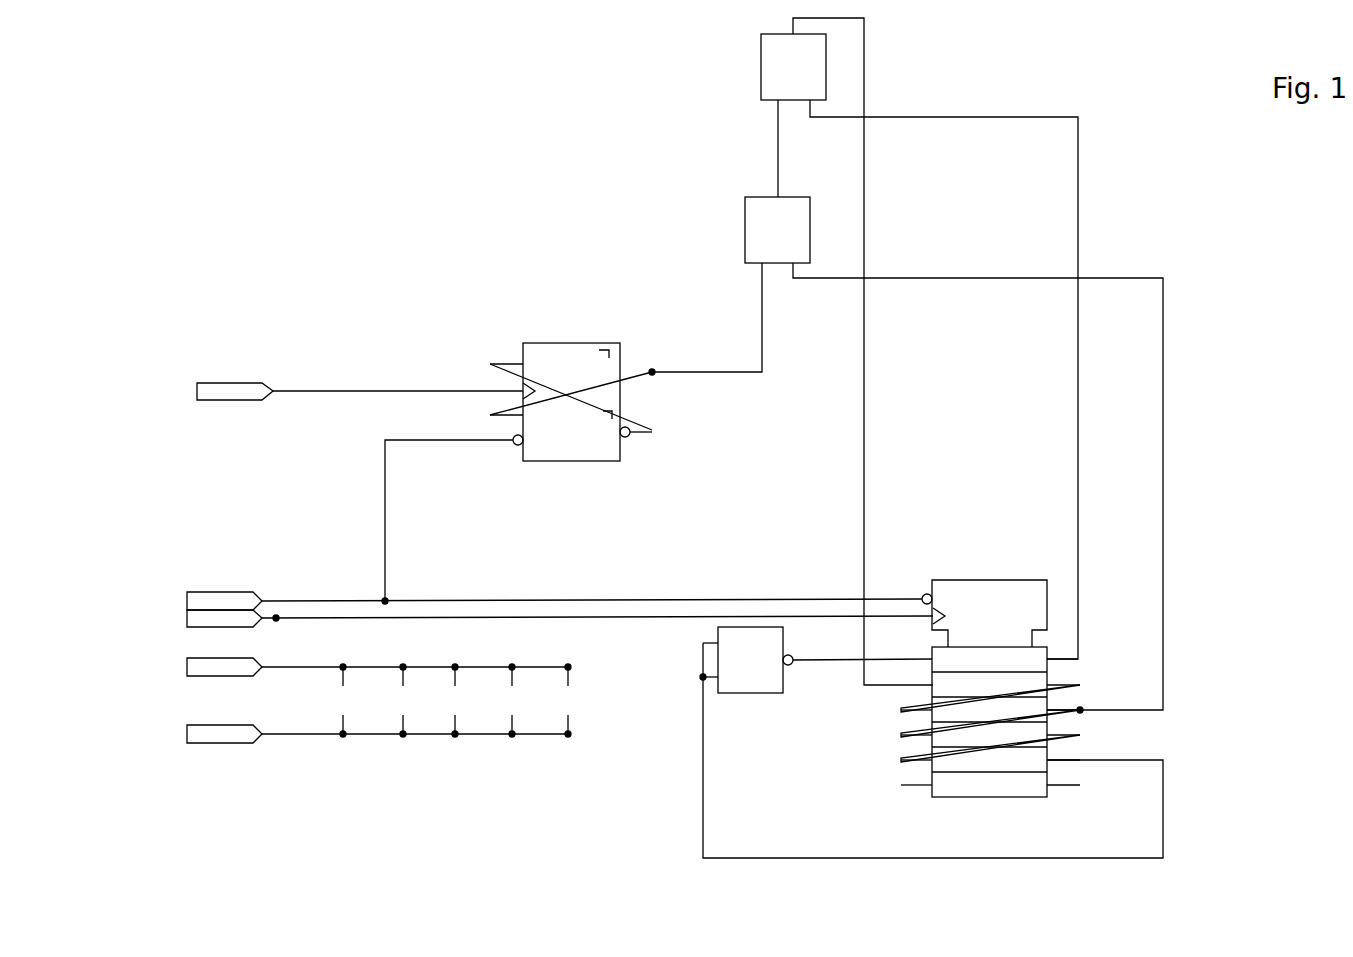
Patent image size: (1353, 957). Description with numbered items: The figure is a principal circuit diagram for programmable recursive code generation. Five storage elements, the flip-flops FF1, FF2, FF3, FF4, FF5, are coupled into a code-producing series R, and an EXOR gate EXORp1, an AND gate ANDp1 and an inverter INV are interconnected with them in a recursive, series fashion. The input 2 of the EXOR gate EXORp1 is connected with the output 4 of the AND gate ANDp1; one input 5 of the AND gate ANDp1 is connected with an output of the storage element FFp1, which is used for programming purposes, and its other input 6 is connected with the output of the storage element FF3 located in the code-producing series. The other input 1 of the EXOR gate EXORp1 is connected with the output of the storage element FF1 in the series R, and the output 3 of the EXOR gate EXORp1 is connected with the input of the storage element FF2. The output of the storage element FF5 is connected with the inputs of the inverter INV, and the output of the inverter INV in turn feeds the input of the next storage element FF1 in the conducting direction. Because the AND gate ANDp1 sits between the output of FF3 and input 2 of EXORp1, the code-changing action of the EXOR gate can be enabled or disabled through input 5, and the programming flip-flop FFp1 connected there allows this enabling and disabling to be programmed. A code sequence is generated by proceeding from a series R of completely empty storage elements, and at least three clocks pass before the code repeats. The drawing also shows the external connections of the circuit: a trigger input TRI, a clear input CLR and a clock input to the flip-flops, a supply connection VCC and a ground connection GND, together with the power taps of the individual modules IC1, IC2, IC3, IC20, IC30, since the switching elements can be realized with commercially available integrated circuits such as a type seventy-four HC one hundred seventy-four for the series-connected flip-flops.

The other input of the EXOR gate 1 is at (937, 379).
The input of the EXOR gate 2 is at (767, 125).
The output of the EXOR gate 3 is at (855, 346).
The output of the AND gate 4 is at (767, 173).
The one input of the AND gate 5 is at (705, 319).
The other input of the AND gate 6 is at (970, 488).
The EXOR gate EXORp1 is at (862, 67).
The AND gate ANDp1 is at (849, 230).
The storage element used for programming purposes FFp1 is at (594, 402).
The inverter INV is at (816, 660).
The code-producing series R is at (858, 770).
The storage element FF1 is at (1089, 660).
The storage element FF2 is at (1089, 685).
The storage element FF3 is at (1089, 710).
The storage element FF4 is at (1089, 735).
The storage element FF5 is at (1089, 760).
The trigger input TRI is at (335, 391).
The clear input CLR is at (528, 527).
The clock input clock is at (534, 622).
The supply voltage VCC is at (346, 667).
The ground GND is at (346, 734).
The integrated circuit 1 IC1 is at (341, 700).
The integrated circuit 2 IC2 is at (404, 700).
The integrated circuit 3 IC3 is at (457, 700).
The integrated circuit 20 IC20 is at (514, 700).
The integrated circuit 30 IC30 is at (574, 700).